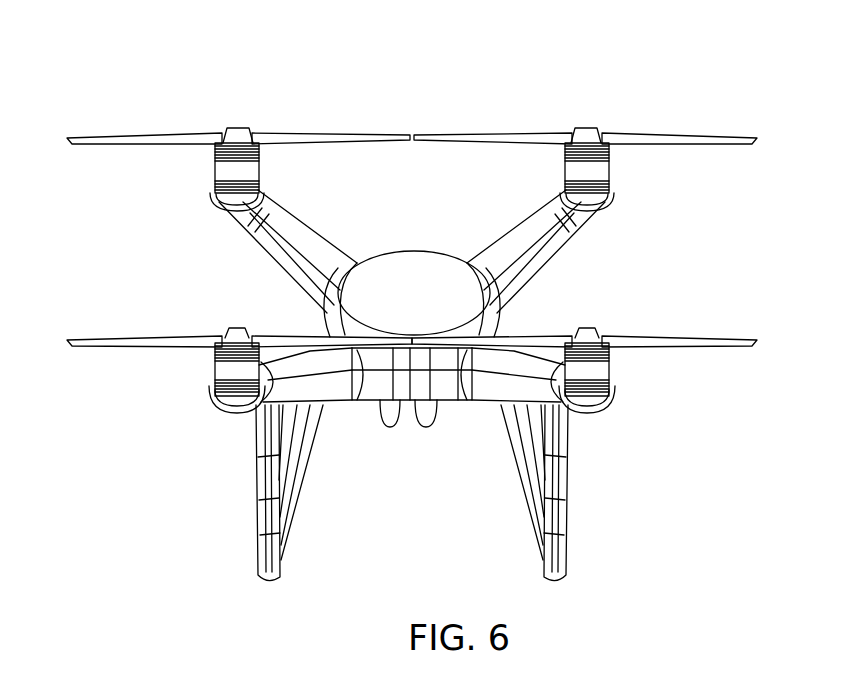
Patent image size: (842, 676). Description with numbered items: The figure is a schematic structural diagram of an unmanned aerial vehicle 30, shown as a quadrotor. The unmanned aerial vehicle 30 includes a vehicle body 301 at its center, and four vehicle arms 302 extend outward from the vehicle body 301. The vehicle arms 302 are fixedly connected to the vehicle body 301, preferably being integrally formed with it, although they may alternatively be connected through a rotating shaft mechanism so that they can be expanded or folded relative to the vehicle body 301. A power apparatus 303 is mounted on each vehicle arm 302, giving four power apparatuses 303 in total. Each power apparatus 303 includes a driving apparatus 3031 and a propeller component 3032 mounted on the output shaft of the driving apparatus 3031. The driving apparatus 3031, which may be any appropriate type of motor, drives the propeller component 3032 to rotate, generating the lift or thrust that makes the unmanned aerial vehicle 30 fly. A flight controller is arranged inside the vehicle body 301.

The unmanned aerial vehicle 30 is at (500, 78).
The vehicle body 301 is at (438, 312).
The vehicle arm 302 is at (300, 263).
The power apparatus 303 is at (753, 87).
The driving apparatus 3031 is at (595, 175).
The propeller component 3032 is at (622, 142).